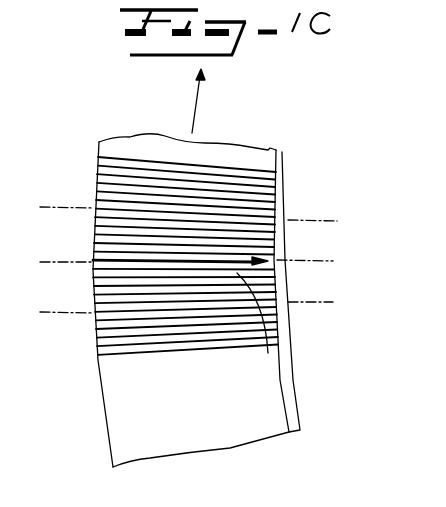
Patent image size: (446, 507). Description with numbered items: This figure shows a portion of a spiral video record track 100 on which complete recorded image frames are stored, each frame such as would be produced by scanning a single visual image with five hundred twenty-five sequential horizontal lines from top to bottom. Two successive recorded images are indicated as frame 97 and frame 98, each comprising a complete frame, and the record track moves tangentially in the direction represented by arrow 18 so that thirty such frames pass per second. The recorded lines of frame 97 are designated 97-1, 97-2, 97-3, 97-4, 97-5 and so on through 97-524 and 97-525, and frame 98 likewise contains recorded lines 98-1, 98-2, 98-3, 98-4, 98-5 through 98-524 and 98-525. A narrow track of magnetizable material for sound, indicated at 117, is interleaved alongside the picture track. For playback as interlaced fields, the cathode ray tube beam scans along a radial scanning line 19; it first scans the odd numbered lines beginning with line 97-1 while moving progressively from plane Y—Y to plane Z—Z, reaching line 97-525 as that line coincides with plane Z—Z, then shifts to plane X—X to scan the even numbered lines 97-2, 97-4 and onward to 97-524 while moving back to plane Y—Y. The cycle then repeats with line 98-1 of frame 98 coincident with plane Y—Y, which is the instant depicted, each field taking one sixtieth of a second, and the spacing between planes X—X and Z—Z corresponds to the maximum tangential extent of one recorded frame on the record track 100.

The arrow 18 is at (198, 97).
The scanning line 19 is at (117, 262).
The recorded image frame 97 is at (87, 179).
The recorded line 97-1 is at (258, 173).
The recorded line 97-2 is at (244, 181).
The recorded line 97-3 is at (246, 186).
The recorded line 97-4 is at (194, 192).
The recorded line 97-5 is at (175, 197).
The recorded line 97-524 is at (237, 249).
The recorded line 97-525 is at (250, 251).
The recorded image frame 98 is at (95, 335).
The recorded line 98-1 is at (278, 277).
The recorded line 98-2 is at (270, 315).
The recorded line 98-3 is at (285, 355).
The recorded line 98-4 is at (231, 285).
The recorded line 98-5 is at (207, 305).
The recorded line 98-524 is at (125, 352).
The recorded line 98-525 is at (113, 357).
The spiral video record track 100 is at (99, 428).
The sound track 117 is at (298, 418).